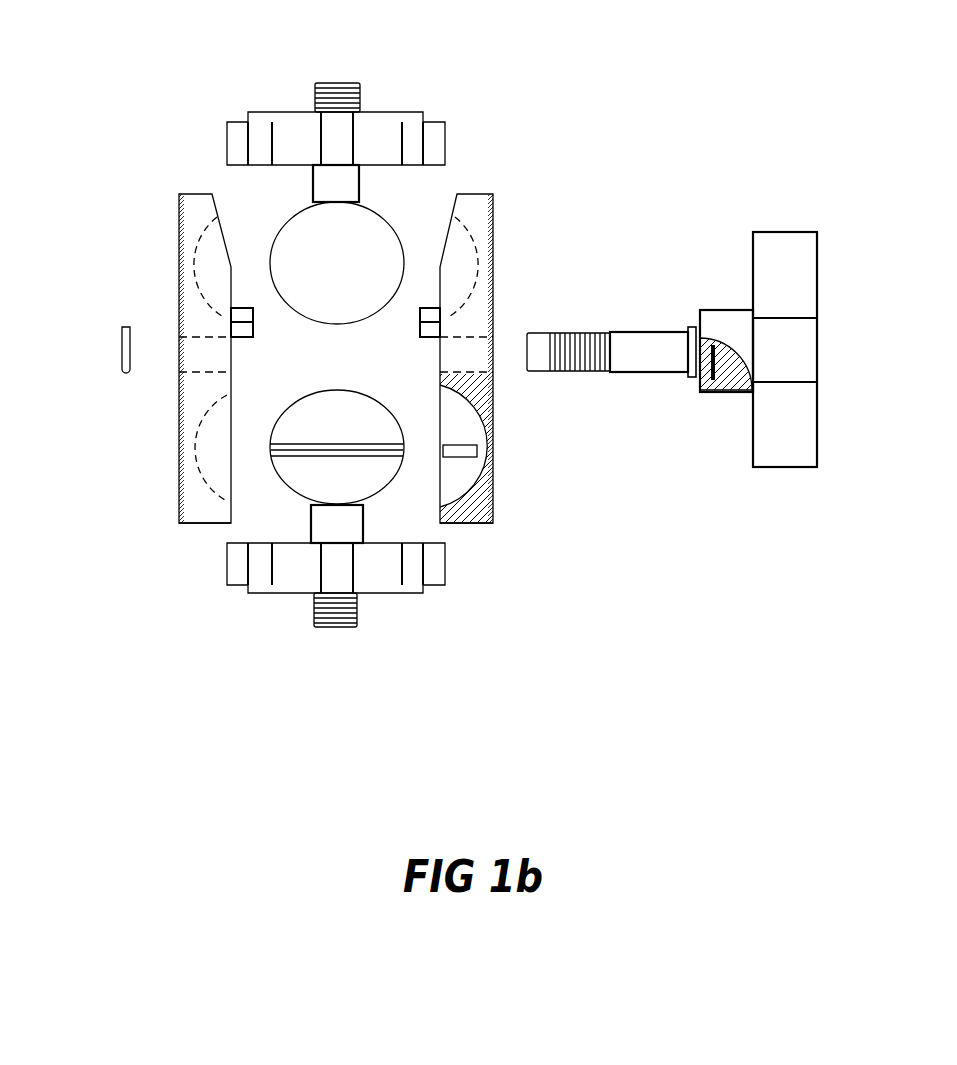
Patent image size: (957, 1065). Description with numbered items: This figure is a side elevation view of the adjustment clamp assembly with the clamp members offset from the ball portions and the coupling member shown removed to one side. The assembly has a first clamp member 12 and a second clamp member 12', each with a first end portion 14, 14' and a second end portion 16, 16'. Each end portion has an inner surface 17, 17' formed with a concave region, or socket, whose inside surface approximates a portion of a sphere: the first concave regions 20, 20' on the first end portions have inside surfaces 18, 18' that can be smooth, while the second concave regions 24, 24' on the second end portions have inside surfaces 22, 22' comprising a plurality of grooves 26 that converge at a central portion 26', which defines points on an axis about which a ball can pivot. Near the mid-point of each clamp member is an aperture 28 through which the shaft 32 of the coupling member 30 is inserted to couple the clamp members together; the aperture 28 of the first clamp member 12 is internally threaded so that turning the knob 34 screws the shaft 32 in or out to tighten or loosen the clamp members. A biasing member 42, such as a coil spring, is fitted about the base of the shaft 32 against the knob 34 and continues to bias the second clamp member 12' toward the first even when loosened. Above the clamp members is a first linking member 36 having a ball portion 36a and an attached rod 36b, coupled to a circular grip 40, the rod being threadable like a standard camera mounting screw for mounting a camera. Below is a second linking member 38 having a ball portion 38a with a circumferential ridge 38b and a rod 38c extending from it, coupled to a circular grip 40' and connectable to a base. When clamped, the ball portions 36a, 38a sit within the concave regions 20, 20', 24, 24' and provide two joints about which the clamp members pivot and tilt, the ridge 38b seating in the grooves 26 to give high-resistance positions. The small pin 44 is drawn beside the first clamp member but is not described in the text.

The first clamp member 12 is at (174, 351).
The second clamp member 12' is at (502, 350).
The first end portion 14 is at (171, 267).
The first end portion 14' is at (506, 266).
The second end portion 16 is at (174, 503).
The second end portion 16' is at (502, 503).
The inner surface 17 is at (405, 331).
The inner surface 17' is at (265, 331).
The inside surface 18 is at (167, 309).
The inside surface 18' is at (519, 301).
The first concave region 20 is at (171, 267).
The first concave region 20' is at (509, 269).
The inside surface 22 is at (172, 447).
The inside surface 22' is at (527, 465).
The second concave region 24 is at (237, 441).
The second concave region 24' is at (436, 448).
The grooves 26 is at (441, 480).
The central portion 26' is at (526, 431).
The aperture 28 is at (190, 355).
The coupling member 30 is at (690, 330).
The shaft 32 is at (656, 363).
The knob 34 is at (802, 363).
The first linking member 36 is at (320, 84).
The ball portion 36a is at (285, 243).
The rod 36b is at (355, 190).
The second linking member 38 is at (318, 628).
The ball portion 38a is at (318, 393).
The circumferential ridge 38b is at (298, 458).
The rod 38c is at (348, 620).
The circular grip 40 is at (306, 94).
The circular grip 40' is at (319, 591).
The biasing member 42 is at (690, 380).
The pin 44 is at (119, 340).